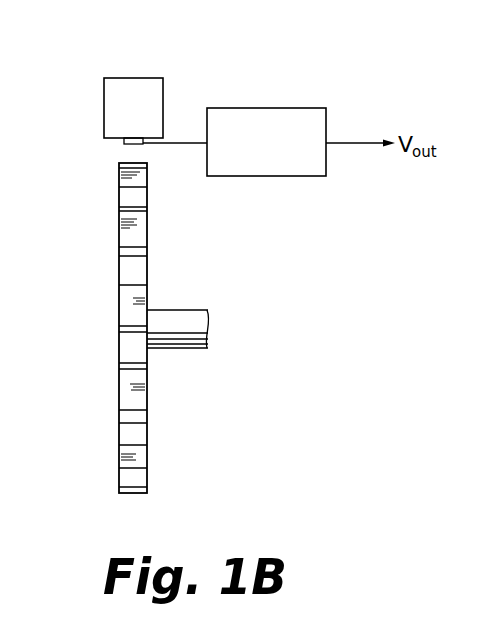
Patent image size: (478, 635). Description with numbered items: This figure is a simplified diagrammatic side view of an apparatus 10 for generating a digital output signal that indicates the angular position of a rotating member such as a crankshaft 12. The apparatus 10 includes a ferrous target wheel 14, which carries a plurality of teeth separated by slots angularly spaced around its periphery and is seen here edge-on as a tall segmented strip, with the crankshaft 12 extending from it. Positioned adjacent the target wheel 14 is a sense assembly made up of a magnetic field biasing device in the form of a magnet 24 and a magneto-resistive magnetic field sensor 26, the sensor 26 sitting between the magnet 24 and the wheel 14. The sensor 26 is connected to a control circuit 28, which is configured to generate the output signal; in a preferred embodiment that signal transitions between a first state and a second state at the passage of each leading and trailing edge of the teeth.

The apparatus 10 is at (177, 95).
The crankshaft 12 is at (202, 313).
The ferrous target wheel 14 is at (152, 271).
The magnet 24 is at (103, 82).
The magneto-resistive magnetic field sensor 26 is at (123, 143).
The control circuit 28 is at (297, 108).